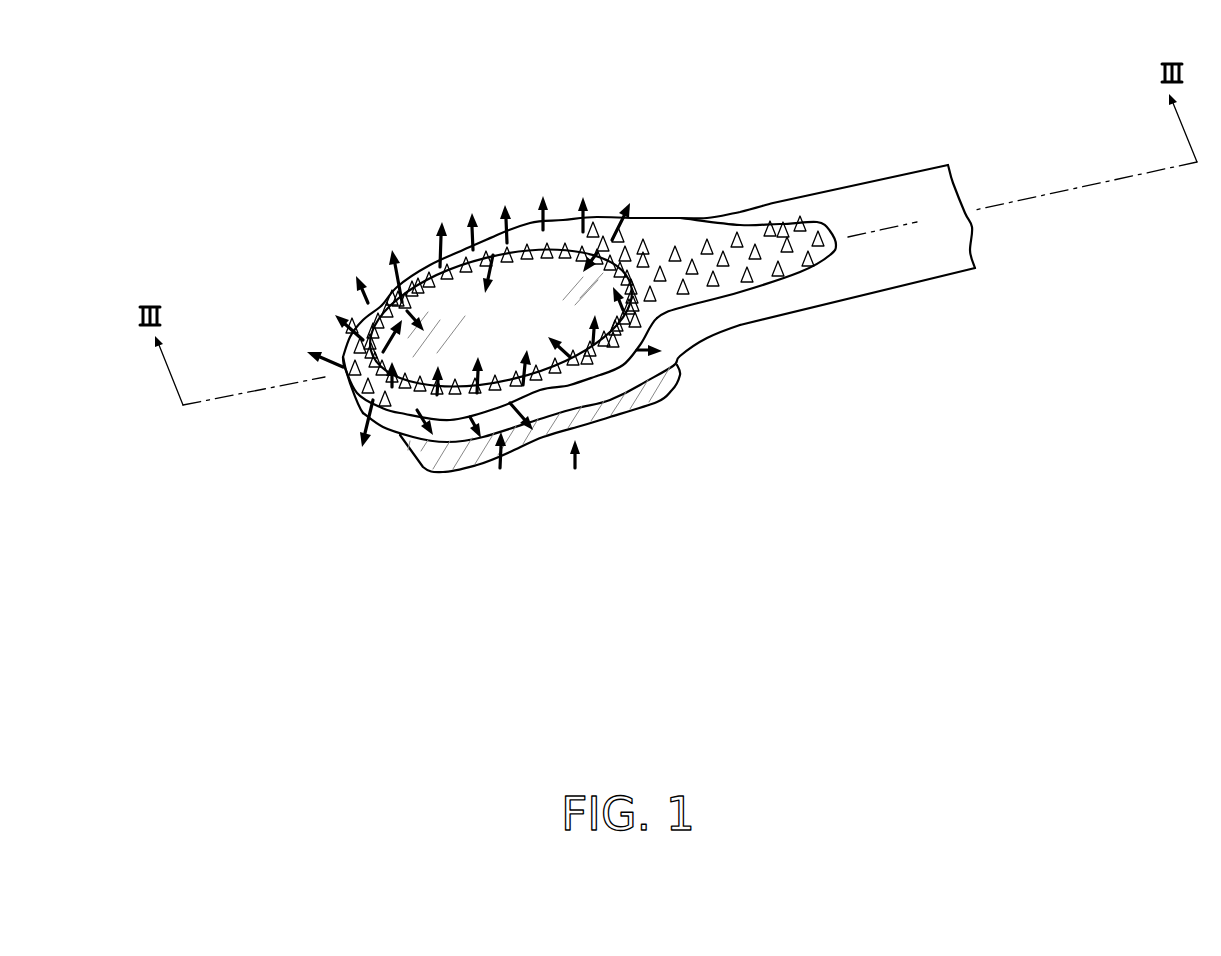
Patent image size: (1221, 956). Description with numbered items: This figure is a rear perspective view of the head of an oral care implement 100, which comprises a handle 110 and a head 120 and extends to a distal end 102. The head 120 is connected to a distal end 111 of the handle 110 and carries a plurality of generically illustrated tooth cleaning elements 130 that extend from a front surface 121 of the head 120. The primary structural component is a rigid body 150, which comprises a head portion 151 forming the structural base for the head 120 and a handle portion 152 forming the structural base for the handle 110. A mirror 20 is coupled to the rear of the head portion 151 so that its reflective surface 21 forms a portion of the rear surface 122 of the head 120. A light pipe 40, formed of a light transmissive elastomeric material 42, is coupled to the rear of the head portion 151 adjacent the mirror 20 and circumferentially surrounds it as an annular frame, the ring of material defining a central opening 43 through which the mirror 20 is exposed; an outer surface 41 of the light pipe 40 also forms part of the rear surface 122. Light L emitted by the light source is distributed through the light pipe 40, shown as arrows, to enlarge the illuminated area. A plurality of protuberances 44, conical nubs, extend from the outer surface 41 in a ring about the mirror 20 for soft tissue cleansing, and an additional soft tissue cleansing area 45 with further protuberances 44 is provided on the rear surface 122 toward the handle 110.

The oral care implement 100 is at (315, 100).
The handle 110 is at (965, 282).
The distal end of the handle 111 is at (838, 205).
The handle portion of the body 152 is at (921, 192).
The body 150 is at (988, 242).
The head 120 is at (575, 468).
The rear surface of the head 122 is at (405, 313).
The distal end 102 is at (345, 386).
The head portion of the body 151 is at (620, 375).
The tooth cleaning elements 130 is at (410, 476).
The front surface of the head 121 is at (499, 468).
The light pipe 40 is at (453, 412).
The light transmissive elastomeric material 42 is at (683, 305).
The mirror 20 is at (556, 240).
The reflective surface 21 is at (517, 336).
The central opening 43 is at (522, 252).
The outer surface of the light pipe 41 is at (636, 228).
The additional soft tissue cleansing area 45 is at (784, 216).
The protuberances 44 is at (460, 252).
The light L is at (438, 233).